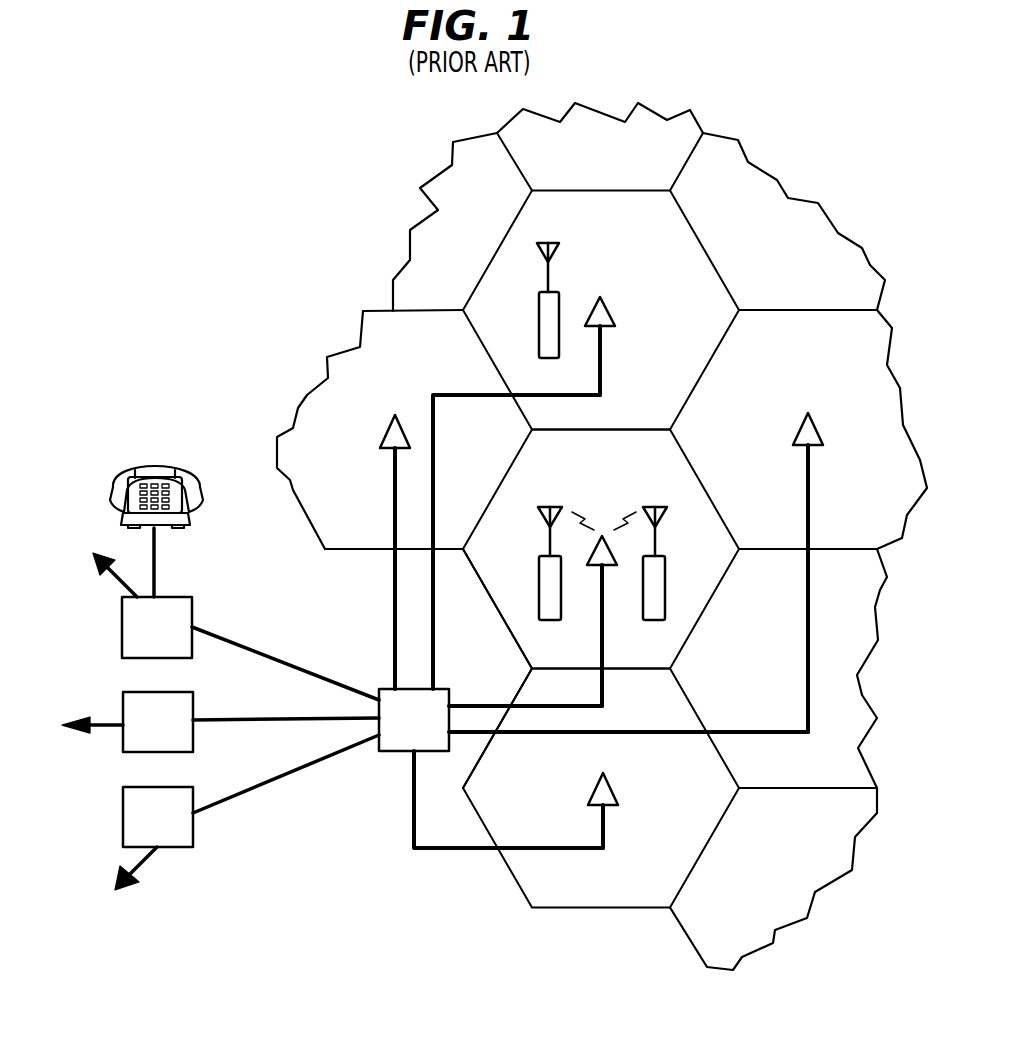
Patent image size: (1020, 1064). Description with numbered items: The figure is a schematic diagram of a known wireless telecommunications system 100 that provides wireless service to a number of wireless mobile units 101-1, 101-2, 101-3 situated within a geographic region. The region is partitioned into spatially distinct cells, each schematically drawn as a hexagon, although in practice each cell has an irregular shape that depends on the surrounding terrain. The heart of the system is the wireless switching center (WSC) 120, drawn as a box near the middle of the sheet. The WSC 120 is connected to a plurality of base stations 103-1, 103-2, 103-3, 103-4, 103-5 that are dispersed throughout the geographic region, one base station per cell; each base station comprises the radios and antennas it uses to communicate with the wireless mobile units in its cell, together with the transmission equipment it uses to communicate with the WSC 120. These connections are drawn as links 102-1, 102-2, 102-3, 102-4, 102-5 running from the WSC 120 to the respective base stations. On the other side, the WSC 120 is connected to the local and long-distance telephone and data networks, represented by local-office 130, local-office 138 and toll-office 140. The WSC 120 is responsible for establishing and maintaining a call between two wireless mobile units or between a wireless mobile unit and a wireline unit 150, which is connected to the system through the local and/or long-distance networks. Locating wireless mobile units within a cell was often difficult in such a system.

The wireless communication system 100 is at (159, 282).
The wireless mobile unit 101-1 is at (547, 507).
The wireless mobile unit 101-2 is at (655, 507).
The wireless mobile unit 101-3 is at (558, 253).
The wireline link to base station 102-1 is at (457, 700).
The wireline link to base station 102-2 is at (428, 412).
The wireline link to base station 102-3 is at (393, 657).
The wireline link to base station 102-4 is at (533, 740).
The wireline link to base station 102-5 is at (412, 843).
The base station 103-1 is at (603, 652).
The base station 103-2 is at (603, 368).
The base station 103-3 is at (392, 470).
The base station 103-4 is at (812, 487).
The base station 103-5 is at (607, 830).
The wireless switching center 120 is at (392, 752).
The local-office 130 is at (122, 630).
The local-office 138 is at (123, 822).
The toll-office 140 is at (123, 703).
The wireline mobile unit 150 is at (153, 467).